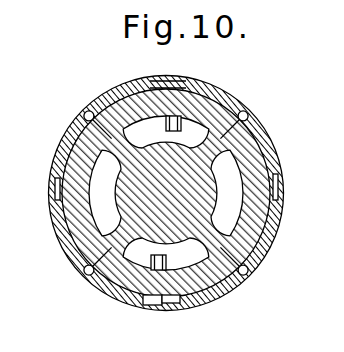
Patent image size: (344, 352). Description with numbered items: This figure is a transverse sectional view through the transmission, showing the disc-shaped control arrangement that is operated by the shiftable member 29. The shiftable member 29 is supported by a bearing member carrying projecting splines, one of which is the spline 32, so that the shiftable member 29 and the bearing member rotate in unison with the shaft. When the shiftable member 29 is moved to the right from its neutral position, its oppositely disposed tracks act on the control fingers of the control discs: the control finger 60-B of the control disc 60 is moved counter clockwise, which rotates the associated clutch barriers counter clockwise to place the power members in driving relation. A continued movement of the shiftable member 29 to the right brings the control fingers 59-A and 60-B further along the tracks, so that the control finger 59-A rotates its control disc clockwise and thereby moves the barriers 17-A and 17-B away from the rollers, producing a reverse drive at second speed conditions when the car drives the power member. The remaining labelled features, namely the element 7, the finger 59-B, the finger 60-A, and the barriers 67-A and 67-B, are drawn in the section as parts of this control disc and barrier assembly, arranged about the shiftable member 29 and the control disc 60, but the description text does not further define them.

The stator body 7 is at (203, 104).
The barrier 17-A is at (173, 116).
The barrier 17-B is at (156, 263).
The shiftable member 29 is at (229, 110).
The projecting spline 32 is at (164, 304).
The control finger 59-A is at (247, 119).
The pin 59-B is at (86, 267).
The control disc 60 is at (258, 231).
The pin 60-A is at (89, 112).
The control finger 60-B is at (246, 271).
The slot 67-A is at (60, 190).
The slot 67-B is at (245, 196).